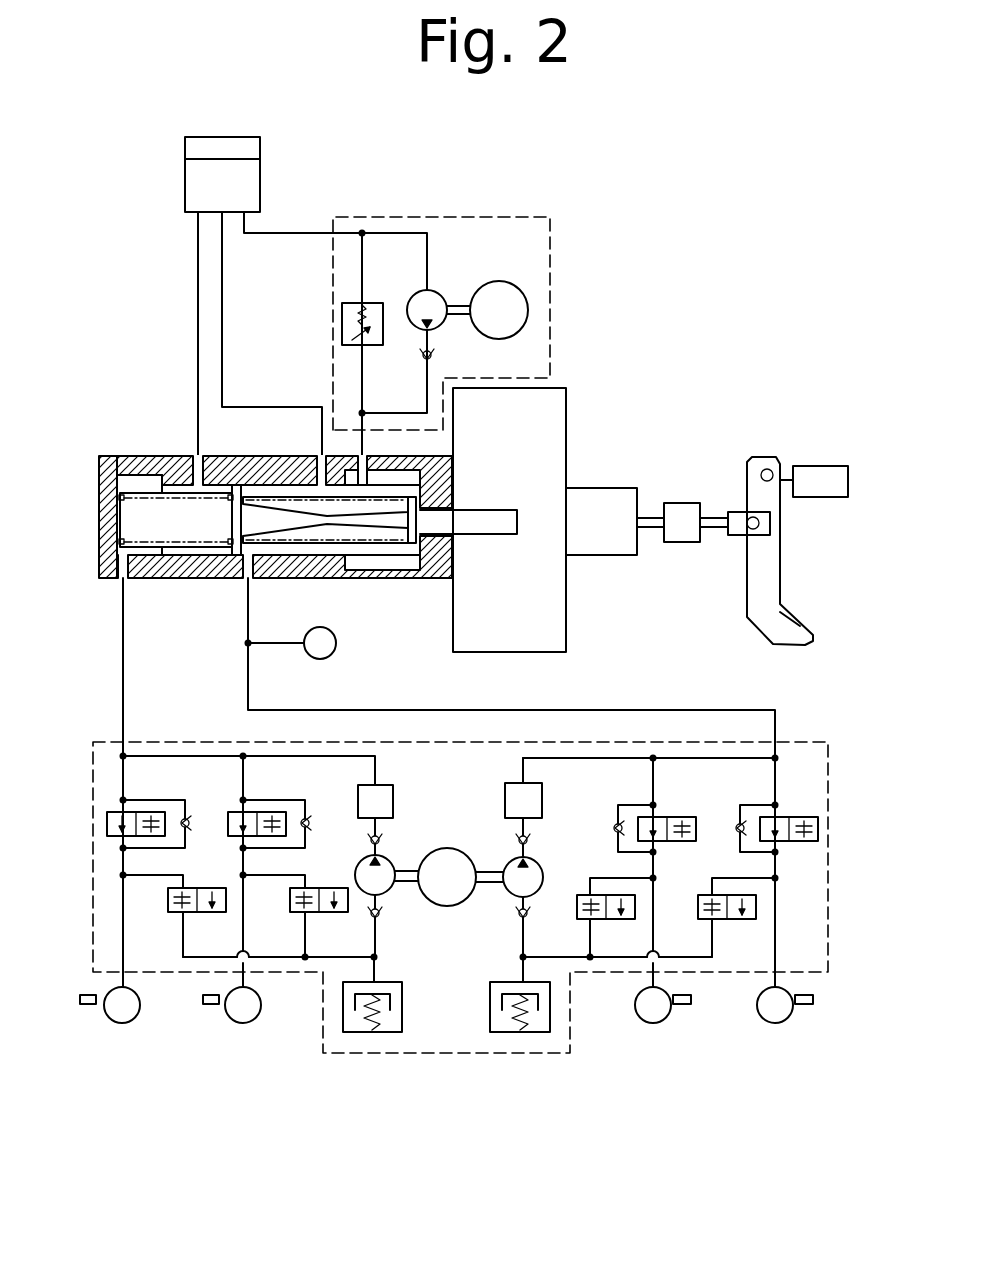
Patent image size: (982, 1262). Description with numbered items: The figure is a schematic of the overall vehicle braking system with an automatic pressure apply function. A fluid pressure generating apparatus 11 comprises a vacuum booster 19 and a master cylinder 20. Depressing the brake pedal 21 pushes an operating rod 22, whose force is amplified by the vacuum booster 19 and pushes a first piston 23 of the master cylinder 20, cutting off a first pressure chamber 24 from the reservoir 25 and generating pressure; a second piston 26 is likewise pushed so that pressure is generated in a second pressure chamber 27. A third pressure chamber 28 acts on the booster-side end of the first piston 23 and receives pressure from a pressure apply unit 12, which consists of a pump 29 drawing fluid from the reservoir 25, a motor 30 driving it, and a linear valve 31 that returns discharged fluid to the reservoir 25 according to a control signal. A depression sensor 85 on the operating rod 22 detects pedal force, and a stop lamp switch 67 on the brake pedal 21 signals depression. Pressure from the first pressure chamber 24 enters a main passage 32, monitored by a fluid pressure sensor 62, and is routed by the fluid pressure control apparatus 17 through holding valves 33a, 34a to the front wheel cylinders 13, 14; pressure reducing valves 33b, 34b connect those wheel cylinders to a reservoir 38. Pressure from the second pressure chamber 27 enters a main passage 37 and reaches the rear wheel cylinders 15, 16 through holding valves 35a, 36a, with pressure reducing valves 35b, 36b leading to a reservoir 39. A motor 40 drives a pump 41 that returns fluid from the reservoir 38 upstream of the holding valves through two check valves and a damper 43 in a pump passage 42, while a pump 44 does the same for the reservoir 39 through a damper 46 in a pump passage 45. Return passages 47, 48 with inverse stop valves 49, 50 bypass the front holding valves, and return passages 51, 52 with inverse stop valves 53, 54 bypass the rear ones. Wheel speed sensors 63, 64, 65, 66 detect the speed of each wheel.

The fluid pressure generating apparatus 11 is at (574, 380).
The pressure apply unit 12 is at (490, 217).
The wheel cylinder 13 is at (774, 1024).
The wheel cylinder 14 is at (652, 1024).
The wheel cylinder 15 is at (121, 1024).
The wheel cylinder 16 is at (244, 1024).
The fluid pressure control apparatus 17 is at (660, 744).
The vacuum booster 19 is at (568, 420).
The master cylinder 20 is at (155, 458).
The brake pedal 21 is at (778, 575).
The operating rod 22 is at (652, 530).
The first piston 23 is at (406, 546).
The first pressure chamber 24 is at (270, 520).
The reservoir 25 is at (262, 172).
The second piston 26 is at (200, 549).
The second pressure chamber 27 is at (143, 525).
The third pressure chamber 28 is at (366, 566).
The pump 29 is at (442, 294).
The motor 30 is at (530, 298).
The linear valve 31 is at (342, 322).
The main passage 32 is at (248, 668).
The holding valve 33a is at (803, 845).
The pressure reducing valve 33b is at (720, 920).
The holding valve 34a is at (694, 817).
The pressure reducing valve 34b is at (576, 911).
The holding valve 35a is at (108, 818).
The pressure reducing valve 35b is at (168, 896).
The holding valve 36a is at (228, 822).
The pressure reducing valve 36b is at (348, 913).
The main passage 37 is at (123, 665).
The reservoir 38 is at (540, 1033).
The reservoir 39 is at (355, 1033).
The motor 40 is at (455, 905).
The pump 41 is at (506, 862).
The pump passage 42 is at (518, 770).
The damper 43 is at (505, 803).
The pump 44 is at (362, 868).
The pump passage 45 is at (395, 805).
The damper 46 is at (382, 832).
The return passage 47 is at (777, 805).
The return passage 48 is at (630, 803).
The inverse stop valve 49 is at (736, 827).
The inverse stop valve 50 is at (613, 832).
The return passage 51 is at (157, 812).
The return passage 52 is at (277, 810).
The inverse stop valve 53 is at (205, 849).
The inverse stop valve 54 is at (310, 820).
The fluid pressure sensor 62 is at (337, 646).
The wheel speed sensor 63 is at (805, 1005).
The wheel speed sensor 64 is at (685, 1005).
The wheel speed sensor 65 is at (86, 1005).
The wheel speed sensor 66 is at (209, 1005).
The stop lamp switch 67 is at (815, 466).
The depression sensor 85 is at (683, 503).